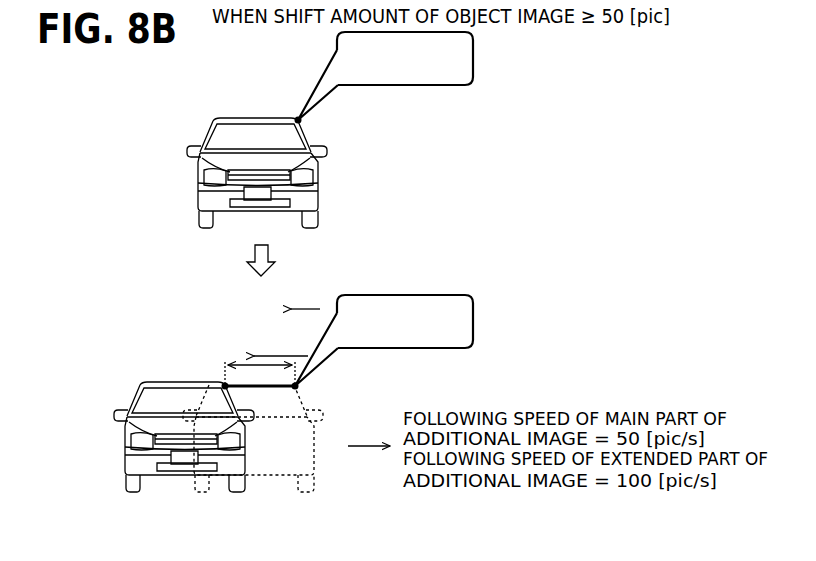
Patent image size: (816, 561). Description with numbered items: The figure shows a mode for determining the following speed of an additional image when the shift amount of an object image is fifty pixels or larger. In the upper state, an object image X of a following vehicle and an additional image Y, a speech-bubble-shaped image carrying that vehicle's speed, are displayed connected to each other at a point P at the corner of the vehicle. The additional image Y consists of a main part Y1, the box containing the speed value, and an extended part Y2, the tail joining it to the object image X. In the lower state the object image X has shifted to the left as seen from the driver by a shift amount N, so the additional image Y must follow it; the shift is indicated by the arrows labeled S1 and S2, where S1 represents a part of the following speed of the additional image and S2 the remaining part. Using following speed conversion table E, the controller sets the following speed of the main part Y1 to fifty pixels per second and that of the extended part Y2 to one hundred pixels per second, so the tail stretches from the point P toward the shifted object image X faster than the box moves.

The object image X is at (260, 118).
The additional image Y is at (384, 220).
The main part of additional image Y1 is at (446, 87).
The extended part of additional image Y2 is at (326, 96).
The point P is at (302, 123).
The shift amount of object image N is at (243, 360).
The part of following speed of additional image S1 is at (322, 305).
The remaining part of following speed of additional image S2 is at (294, 353).